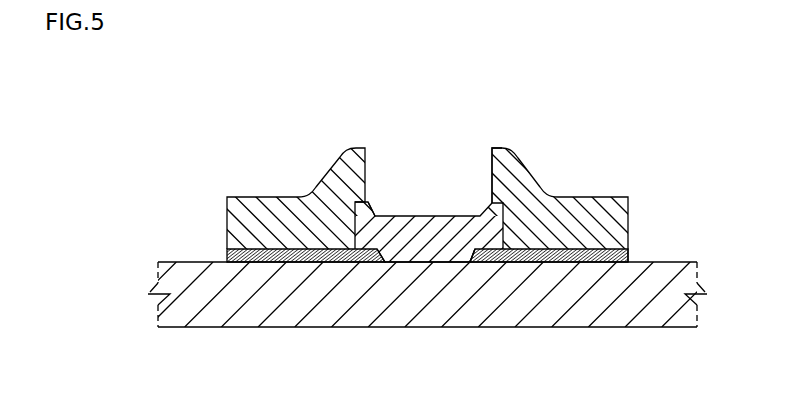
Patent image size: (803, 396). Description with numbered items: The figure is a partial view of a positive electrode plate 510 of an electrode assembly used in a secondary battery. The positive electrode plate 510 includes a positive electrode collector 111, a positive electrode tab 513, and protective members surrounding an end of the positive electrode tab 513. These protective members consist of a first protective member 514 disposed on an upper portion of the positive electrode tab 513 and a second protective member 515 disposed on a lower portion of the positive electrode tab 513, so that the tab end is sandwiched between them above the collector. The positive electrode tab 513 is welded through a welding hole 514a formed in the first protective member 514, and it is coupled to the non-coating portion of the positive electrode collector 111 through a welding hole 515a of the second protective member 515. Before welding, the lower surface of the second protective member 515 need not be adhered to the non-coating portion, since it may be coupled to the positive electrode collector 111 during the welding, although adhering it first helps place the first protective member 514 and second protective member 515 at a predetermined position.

The positive electrode plate 510 is at (429, 233).
The positive electrode tab 513 is at (396, 222).
The first protective member 514 is at (578, 203).
The welding hole 514a is at (492, 163).
The second protective member 515 is at (578, 258).
The welding hole 515a is at (466, 255).
The positive electrode collector 111 is at (353, 322).